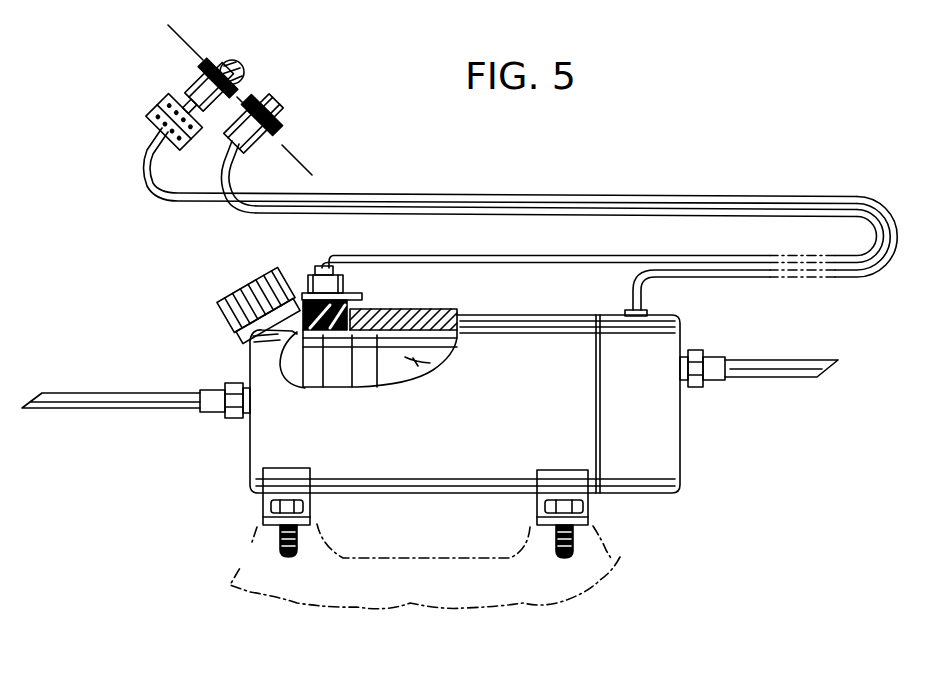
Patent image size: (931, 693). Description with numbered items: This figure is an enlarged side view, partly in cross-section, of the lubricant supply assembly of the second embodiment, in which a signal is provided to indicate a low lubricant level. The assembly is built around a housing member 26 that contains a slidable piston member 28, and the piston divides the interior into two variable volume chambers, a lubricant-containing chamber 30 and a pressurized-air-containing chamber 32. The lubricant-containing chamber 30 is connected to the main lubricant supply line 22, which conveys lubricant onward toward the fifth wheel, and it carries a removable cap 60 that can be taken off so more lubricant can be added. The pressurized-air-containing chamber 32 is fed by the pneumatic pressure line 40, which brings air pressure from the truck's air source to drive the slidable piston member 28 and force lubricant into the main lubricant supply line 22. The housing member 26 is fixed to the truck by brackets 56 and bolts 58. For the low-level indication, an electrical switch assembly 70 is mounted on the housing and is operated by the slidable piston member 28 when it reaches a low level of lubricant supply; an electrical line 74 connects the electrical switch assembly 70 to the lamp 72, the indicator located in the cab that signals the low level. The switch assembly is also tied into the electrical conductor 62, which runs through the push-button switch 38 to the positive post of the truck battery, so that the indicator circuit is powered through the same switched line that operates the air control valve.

The main lubricant supply line 22 is at (72, 398).
The housing member 26 is at (392, 312).
The slidable piston member 28 is at (313, 388).
The lubricant-containing chamber 30 is at (250, 362).
The pressurized-air-containing chamber 32 is at (450, 323).
The push-button switch 38 is at (283, 102).
The pneumatic pressure line 40 is at (792, 367).
The brackets 56 is at (263, 484).
The bolts 58 is at (278, 542).
The removable cap 60 is at (238, 297).
The electrical conductor 62 is at (770, 197).
The electrical switch assembly 70 is at (304, 268).
The lamp 72 is at (240, 60).
The electrical line 74 is at (147, 193).